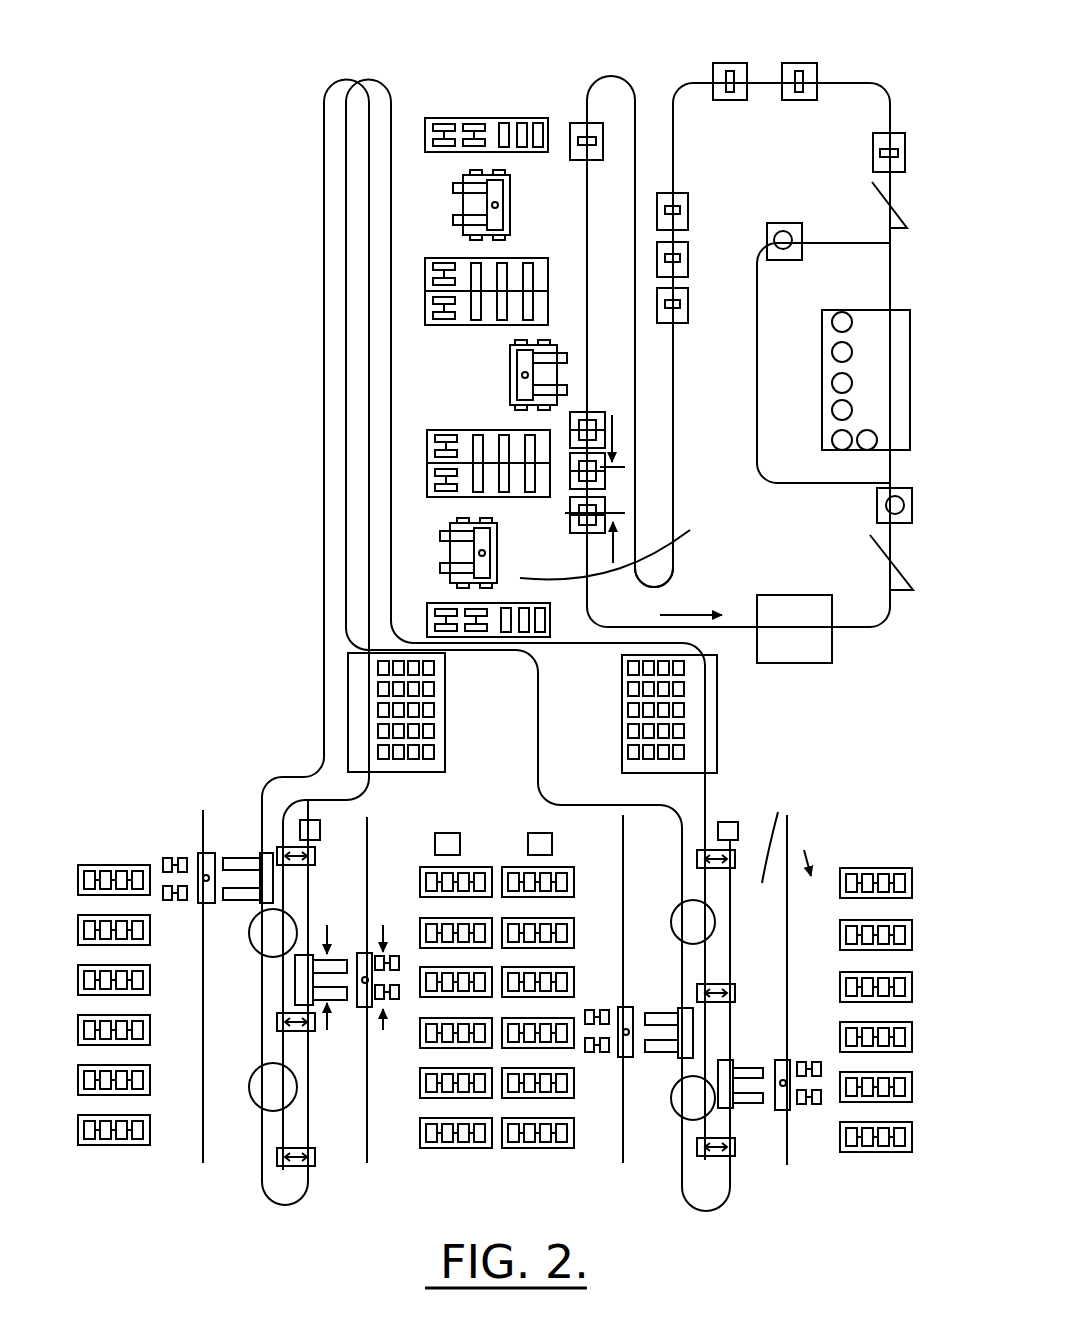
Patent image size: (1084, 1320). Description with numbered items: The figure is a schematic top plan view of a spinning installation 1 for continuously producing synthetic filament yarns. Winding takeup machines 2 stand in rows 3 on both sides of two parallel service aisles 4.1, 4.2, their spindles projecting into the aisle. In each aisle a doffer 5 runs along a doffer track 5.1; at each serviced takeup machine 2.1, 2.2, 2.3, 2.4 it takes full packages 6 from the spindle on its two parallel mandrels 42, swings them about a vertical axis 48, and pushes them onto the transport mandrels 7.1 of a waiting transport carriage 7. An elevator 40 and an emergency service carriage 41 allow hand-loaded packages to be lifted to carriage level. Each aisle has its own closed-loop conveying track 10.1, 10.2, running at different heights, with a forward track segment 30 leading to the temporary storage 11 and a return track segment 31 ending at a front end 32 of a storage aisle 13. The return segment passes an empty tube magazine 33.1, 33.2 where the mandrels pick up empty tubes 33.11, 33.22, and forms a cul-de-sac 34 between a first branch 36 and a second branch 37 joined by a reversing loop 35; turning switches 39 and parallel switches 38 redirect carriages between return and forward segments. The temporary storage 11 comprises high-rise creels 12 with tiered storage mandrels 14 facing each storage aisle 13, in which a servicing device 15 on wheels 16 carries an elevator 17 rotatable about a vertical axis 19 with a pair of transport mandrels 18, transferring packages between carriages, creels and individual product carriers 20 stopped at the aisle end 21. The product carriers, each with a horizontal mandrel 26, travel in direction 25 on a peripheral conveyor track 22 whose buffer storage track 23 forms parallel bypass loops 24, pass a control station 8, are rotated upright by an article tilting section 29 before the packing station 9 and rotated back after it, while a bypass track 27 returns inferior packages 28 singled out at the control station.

The spinning installation 1 is at (240, 280).
The winding takeup machines 2 is at (885, 868).
The takeup machine 2.1 is at (120, 865).
The takeup machine 2.2 is at (440, 997).
The takeup machine 2.3 is at (553, 1020).
The takeup machine 2.4 is at (845, 1102).
The rows of takeup machines 3 is at (808, 847).
The service aisle 4.1 is at (787, 832).
The service aisle 4.2 is at (238, 830).
The doffer 5 is at (205, 903).
The doffer track 5.1 is at (200, 835).
The full packages 6 is at (797, 1065).
The transport carriage 7 is at (680, 1015).
The transport mandrel 7.1 is at (740, 1068).
The control station 8 is at (790, 606).
The packing station 9 is at (870, 320).
The conveying track 10.1 is at (538, 722).
The conveying track 10.2 is at (303, 777).
The temporary storage 11 is at (408, 363).
The high-rise creels 12 is at (520, 135).
The storage aisle 13 is at (553, 250).
The storage mandrels 14 is at (508, 136).
The servicing device 15 is at (470, 205).
The wheels 16 is at (535, 152).
The elevator 17 is at (500, 187).
The transport mandrels 18 is at (465, 228).
The vertical axis 19 is at (548, 357).
The individual product carriers 20 is at (604, 140).
The end of storage aisle 21 is at (624, 545).
The peripheral conveyor track 22 is at (590, 408).
The buffer storage track 23 is at (651, 90).
The bypass loops 24 is at (675, 440).
The direction of travel 25 is at (676, 615).
The mandrel of product carrier 26 is at (680, 210).
The bypass track 27 is at (757, 397).
The singled-out packages 28 is at (785, 258).
The article tilting section 29 is at (872, 186).
The forward track segment 30 is at (308, 883).
The return track segment 31 is at (370, 540).
The front end of storage aisle 32 is at (410, 465).
The empty tube magazine 33.1 is at (713, 705).
The empty tube 33.11 is at (685, 730).
The empty tube magazine 33.2 is at (445, 712).
The empty tube 33.22 is at (438, 760).
The cul-de-sac 34 is at (295, 1052).
The reversing loop 35 is at (305, 1202).
The first branch 36 is at (260, 980).
The second branch 37 is at (310, 1122).
The parallel switches 38 is at (316, 1158).
The turning switches 39 is at (255, 1105).
The elevator 40 is at (745, 805).
The emergency service carriage 41 is at (437, 845).
The doffer mandrels 42 is at (615, 1058).
The vertical axis 48 is at (627, 1035).